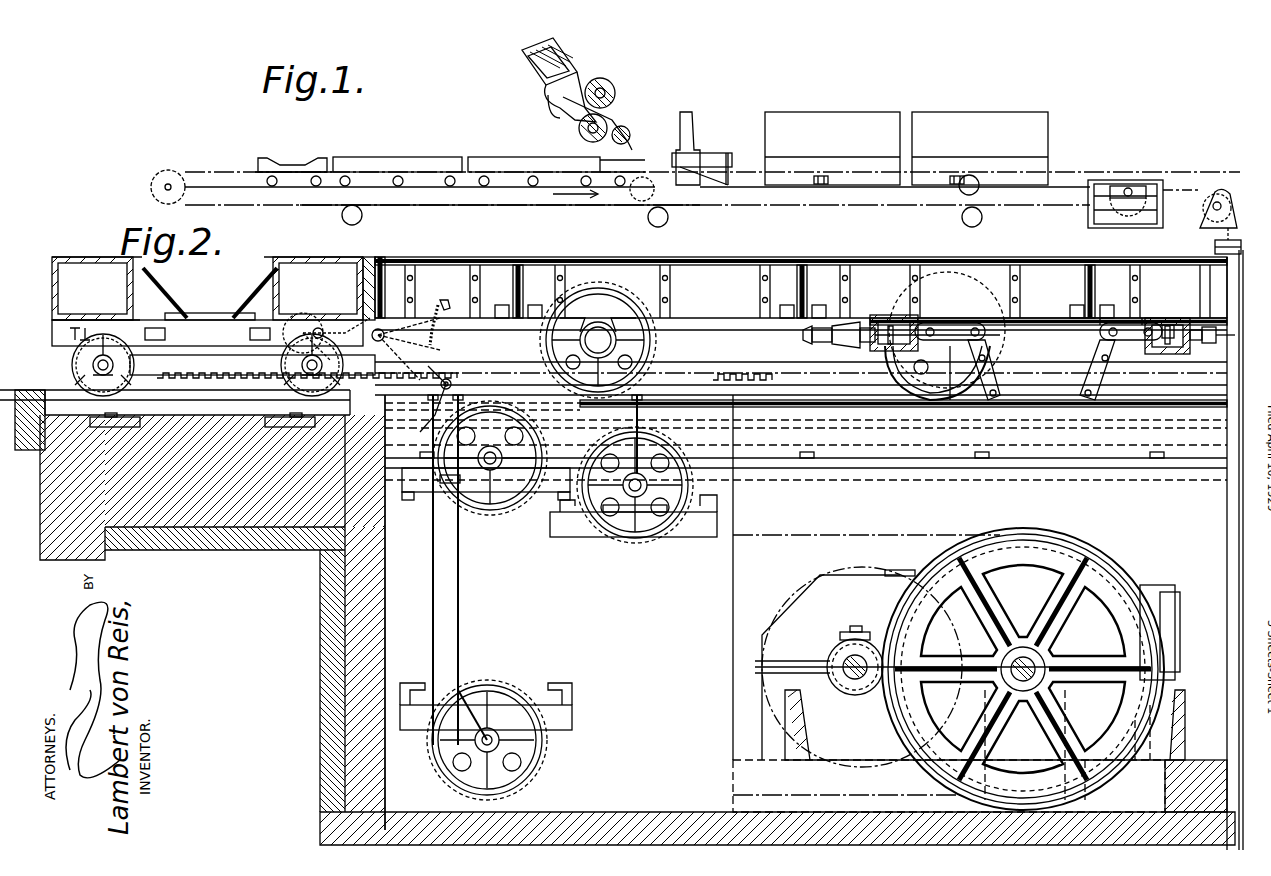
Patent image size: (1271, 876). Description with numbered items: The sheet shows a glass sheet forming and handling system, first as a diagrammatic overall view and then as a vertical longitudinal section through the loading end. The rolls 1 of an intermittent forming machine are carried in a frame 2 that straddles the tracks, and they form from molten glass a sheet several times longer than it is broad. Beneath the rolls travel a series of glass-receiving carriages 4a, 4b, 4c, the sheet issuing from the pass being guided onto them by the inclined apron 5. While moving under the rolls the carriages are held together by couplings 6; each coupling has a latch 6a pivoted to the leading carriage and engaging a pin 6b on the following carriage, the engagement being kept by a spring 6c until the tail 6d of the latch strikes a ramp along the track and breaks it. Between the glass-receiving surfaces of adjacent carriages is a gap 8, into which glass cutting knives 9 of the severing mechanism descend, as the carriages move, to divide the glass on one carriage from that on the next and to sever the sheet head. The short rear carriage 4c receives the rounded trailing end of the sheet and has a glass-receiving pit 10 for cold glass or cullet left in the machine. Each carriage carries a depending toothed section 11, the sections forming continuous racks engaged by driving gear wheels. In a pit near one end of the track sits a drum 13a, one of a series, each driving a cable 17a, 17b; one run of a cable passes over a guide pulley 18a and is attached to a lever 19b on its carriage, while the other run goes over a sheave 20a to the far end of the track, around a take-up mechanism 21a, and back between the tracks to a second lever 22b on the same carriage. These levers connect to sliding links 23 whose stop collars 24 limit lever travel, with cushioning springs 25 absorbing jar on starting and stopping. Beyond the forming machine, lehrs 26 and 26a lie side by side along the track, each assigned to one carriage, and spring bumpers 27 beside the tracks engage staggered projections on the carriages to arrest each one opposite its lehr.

In FIG. 1, the rolls of the intermittent forming machine 1 is at (610, 100).
In FIG. 1, the frame of the forming machine 2 is at (556, 112).
In FIG. 1, the glass-receiving carriage 4a is at (505, 157).
In FIG. 1, the glass-receiving carriage 4b is at (392, 157).
In FIG. 2, the glass-receiving carriage 4b is at (936, 258).
In FIG. 1, the glass-receiving carriage 4c is at (300, 158).
In FIG. 2, the glass-receiving carriage 4c is at (330, 257).
In FIG. 1, the inclined apron 5 is at (612, 140).
In FIG. 2, the coupling 6 is at (445, 302).
In FIG. 2, the latch 6a is at (305, 330).
In FIG. 2, the pin 6b is at (323, 333).
In FIG. 2, the spring 6c is at (427, 349).
In FIG. 2, the tail of the latch 6d is at (440, 405).
In FIG. 2, the gap 8 is at (375, 257).
In FIG. 1, the glass cutting knives 9 is at (692, 118).
In FIG. 2, the glass-receiving pit 10 is at (178, 302).
In FIG. 2, the depending toothed section 11 is at (722, 378).
In FIG. 2, the drum 13a is at (1108, 552).
In FIG. 1, the cable 17a is at (778, 206).
In FIG. 2, the cable 17a is at (782, 402).
In FIG. 2, the cable 17b is at (852, 402).
In FIG. 2, the guide pulley 18a is at (520, 505).
In FIG. 2, the lever 19b is at (995, 368).
In FIG. 1, the sheave 20a is at (170, 170).
In FIG. 2, the sheave 20a is at (683, 525).
In FIG. 1, the take-up mechanism 21a is at (1218, 192).
In FIG. 2, the second lever 22b is at (1082, 398).
In FIG. 2, the sliding link 23 is at (898, 326).
In FIG. 2, the stop collar 24 is at (895, 385).
In FIG. 2, the cushioning spring 25 is at (812, 340).
In FIG. 1, the lehr 26 is at (840, 114).
In FIG. 1, the lehr 26a is at (980, 114).
In FIG. 1, the spring bumper 27 is at (822, 176).